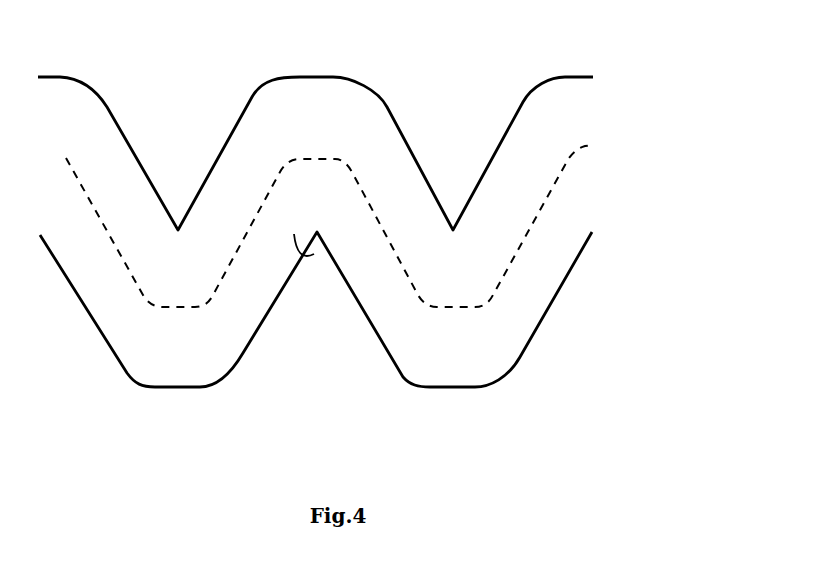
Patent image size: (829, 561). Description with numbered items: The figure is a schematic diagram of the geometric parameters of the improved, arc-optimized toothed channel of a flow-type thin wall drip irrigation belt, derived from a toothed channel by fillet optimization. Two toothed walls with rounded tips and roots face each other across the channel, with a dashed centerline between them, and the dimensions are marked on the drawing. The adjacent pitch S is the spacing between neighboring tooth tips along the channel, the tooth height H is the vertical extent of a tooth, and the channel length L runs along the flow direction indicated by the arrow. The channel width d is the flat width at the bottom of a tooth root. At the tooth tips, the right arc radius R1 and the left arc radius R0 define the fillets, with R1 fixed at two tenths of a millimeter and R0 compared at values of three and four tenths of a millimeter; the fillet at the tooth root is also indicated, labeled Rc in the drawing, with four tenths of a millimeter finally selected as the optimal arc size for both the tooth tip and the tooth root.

The adjacent pitch S is at (177, 62).
The tooth height H is at (52, 77).
The channel length L is at (540, 230).
The channel width d is at (127, 395).
The right arc radius of the tooth tip R1 is at (177, 215).
The left arc radius of the tooth tip R0 is at (302, 260).
The radius at trough corner Rc is at (405, 382).